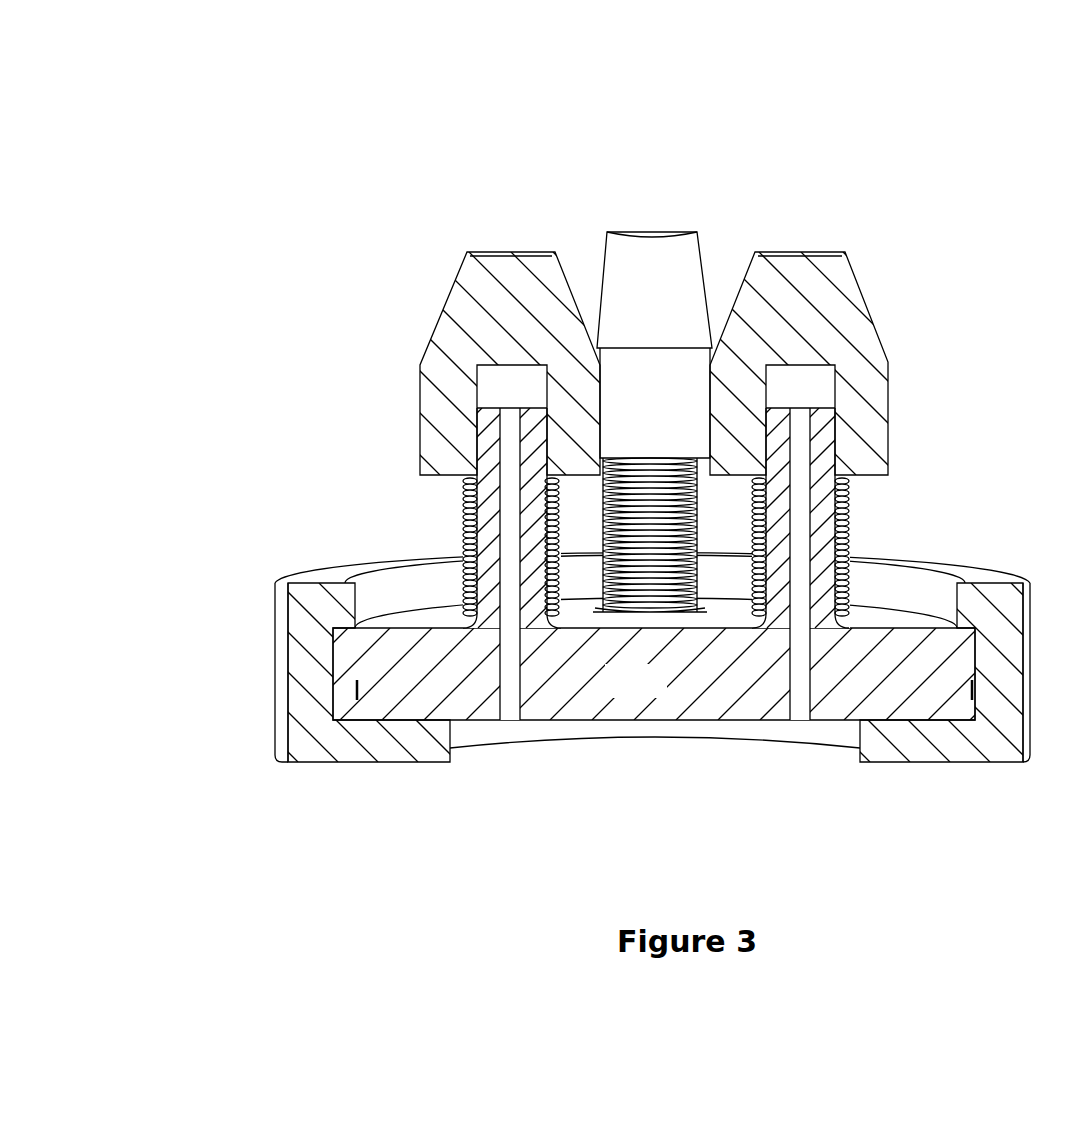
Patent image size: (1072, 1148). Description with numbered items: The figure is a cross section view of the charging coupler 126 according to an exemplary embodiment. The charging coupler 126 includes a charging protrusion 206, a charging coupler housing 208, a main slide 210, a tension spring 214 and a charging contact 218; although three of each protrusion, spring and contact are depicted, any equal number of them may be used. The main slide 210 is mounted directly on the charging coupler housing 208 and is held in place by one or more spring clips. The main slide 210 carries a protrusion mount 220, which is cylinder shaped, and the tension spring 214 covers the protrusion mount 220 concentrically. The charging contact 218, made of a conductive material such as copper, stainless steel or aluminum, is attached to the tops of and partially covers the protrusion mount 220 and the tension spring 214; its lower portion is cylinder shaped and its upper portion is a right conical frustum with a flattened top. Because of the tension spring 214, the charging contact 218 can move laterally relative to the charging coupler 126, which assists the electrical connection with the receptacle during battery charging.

The charging coupler 126 is at (166, 92).
The charging protrusion 206 is at (368, 327).
The charging coupler housing 208 is at (225, 570).
The main slide 210 is at (660, 695).
The tension spring 214 is at (855, 512).
The charging contact 218 is at (860, 293).
The protrusion mount 220 is at (778, 595).